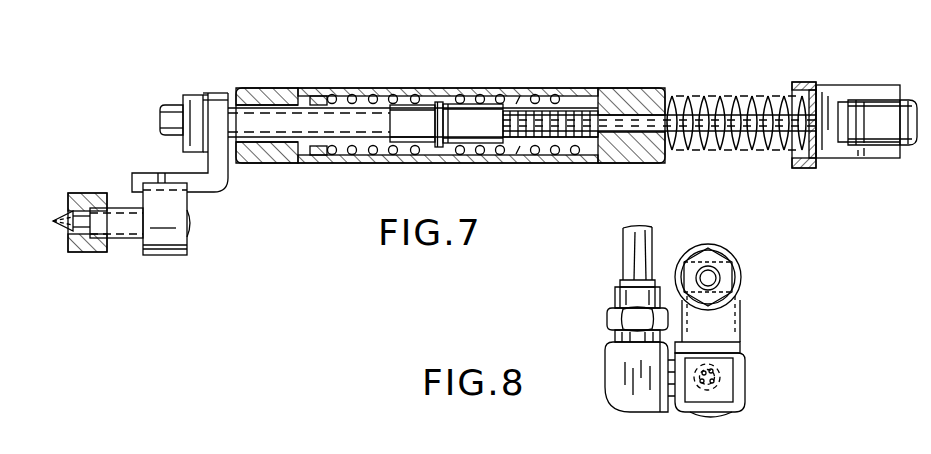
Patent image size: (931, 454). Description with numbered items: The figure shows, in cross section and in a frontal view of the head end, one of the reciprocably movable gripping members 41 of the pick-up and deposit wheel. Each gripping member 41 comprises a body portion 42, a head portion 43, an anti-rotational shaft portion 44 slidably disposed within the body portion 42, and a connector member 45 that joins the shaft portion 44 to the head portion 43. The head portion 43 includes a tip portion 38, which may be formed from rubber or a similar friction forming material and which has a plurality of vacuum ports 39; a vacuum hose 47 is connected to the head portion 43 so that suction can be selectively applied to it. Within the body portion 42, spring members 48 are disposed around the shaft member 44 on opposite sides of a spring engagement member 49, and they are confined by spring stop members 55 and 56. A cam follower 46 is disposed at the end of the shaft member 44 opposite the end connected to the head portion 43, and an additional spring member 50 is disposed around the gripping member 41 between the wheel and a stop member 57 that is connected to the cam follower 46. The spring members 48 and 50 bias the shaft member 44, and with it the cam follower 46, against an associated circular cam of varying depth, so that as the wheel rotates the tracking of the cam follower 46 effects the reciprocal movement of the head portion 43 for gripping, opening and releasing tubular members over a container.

In FIG. 7, the tip portion 38 is at (82, 254).
In FIG. 8, the tip portion 38 is at (725, 400).
In FIG. 7, the vacuum ports 39 is at (56, 222).
In FIG. 8, the vacuum ports 39 is at (712, 376).
In FIG. 7, the gripping member 41 is at (598, 82).
In FIG. 7, the body portion 42 is at (440, 100).
In FIG. 7, the head portion 43 is at (158, 260).
In FIG. 8, the head portion 43 is at (738, 339).
In FIG. 7, the anti-rotational shaft portion 44 is at (348, 122).
In FIG. 7, the connector member 45 is at (224, 192).
In FIG. 7, the cam follower 46 is at (866, 118).
In FIG. 8, the vacuum hose 47 is at (632, 258).
In FIG. 7, the spring members 48 is at (378, 95).
In FIG. 7, the spring engagement member 49 is at (462, 100).
In FIG. 7, the additional spring member 50 is at (728, 96).
In FIG. 7, the spring stop member 55 is at (596, 110).
In FIG. 7, the spring stop member 56 is at (306, 92).
In FIG. 7, the stop member 57 is at (808, 82).